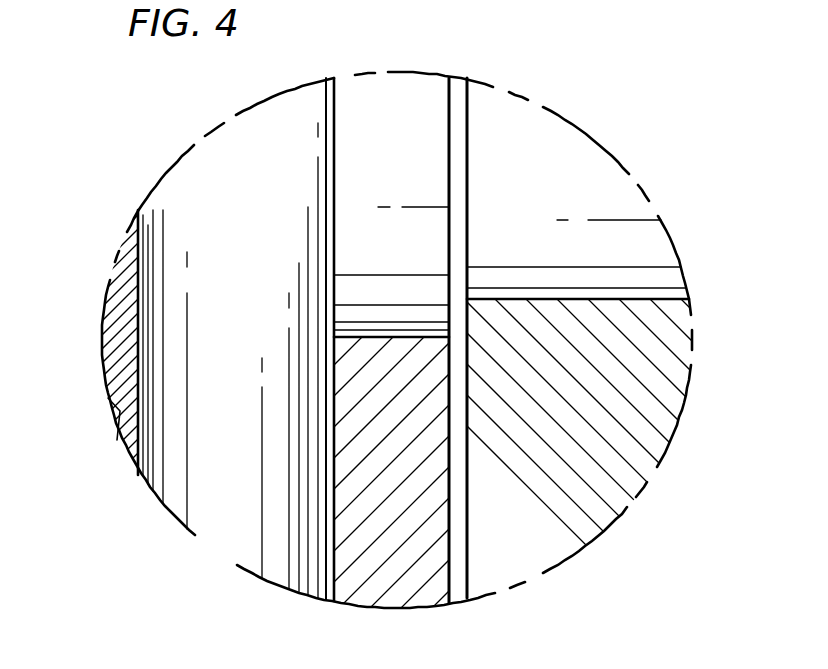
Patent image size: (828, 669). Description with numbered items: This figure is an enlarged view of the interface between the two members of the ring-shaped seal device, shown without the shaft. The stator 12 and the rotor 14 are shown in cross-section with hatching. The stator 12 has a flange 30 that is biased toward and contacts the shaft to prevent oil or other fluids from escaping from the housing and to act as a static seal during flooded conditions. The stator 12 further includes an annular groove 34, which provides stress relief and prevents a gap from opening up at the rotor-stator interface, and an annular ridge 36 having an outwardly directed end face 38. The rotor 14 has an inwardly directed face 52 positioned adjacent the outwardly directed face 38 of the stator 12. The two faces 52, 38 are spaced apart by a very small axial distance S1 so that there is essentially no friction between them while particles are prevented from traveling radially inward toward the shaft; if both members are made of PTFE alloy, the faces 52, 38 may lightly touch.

The stator 12 is at (368, 585).
The rotor 14 is at (660, 435).
The flange 30 is at (120, 420).
The annular groove 34 is at (220, 512).
The annular ridge 36 is at (345, 132).
The outwardly directed end face 38 is at (449, 140).
The inwardly directed face 52 is at (467, 140).
The axial distance S1 is at (400, 258).